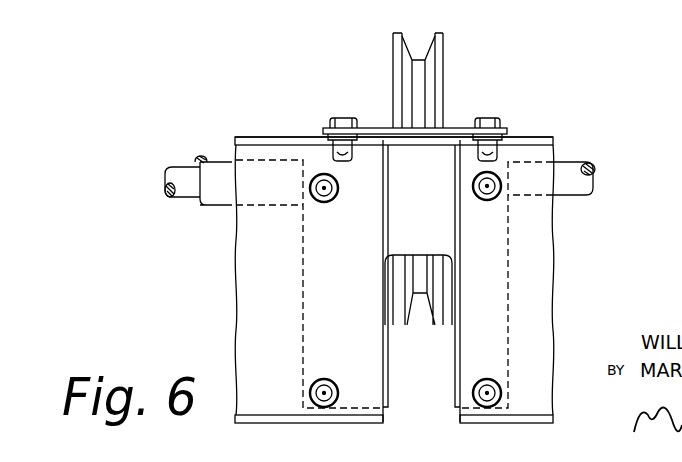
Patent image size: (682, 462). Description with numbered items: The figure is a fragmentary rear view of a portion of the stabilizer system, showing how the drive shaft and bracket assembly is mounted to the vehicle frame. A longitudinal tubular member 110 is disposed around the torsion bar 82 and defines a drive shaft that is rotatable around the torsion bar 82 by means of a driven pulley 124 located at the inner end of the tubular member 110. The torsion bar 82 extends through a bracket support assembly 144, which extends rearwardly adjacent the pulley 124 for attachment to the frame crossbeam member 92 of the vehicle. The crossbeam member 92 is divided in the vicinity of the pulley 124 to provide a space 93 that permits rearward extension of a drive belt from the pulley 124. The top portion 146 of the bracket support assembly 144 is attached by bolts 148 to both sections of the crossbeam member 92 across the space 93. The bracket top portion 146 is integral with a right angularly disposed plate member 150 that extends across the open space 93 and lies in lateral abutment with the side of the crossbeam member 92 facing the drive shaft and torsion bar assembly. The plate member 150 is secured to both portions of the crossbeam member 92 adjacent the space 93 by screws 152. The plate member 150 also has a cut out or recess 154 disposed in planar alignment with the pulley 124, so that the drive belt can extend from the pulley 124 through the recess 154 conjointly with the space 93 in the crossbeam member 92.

The torsion bar 82 is at (183, 190).
The crossbeam member 92 is at (250, 281).
The space 93 is at (430, 390).
The tubular member 110 is at (217, 163).
The pulley 124 is at (438, 60).
The bracket support assembly 144 is at (510, 133).
The top portion 146 is at (378, 128).
The bolts 148 is at (339, 120).
The plate member 150 is at (508, 259).
The screws 152 is at (312, 203).
The recess 154 is at (388, 360).